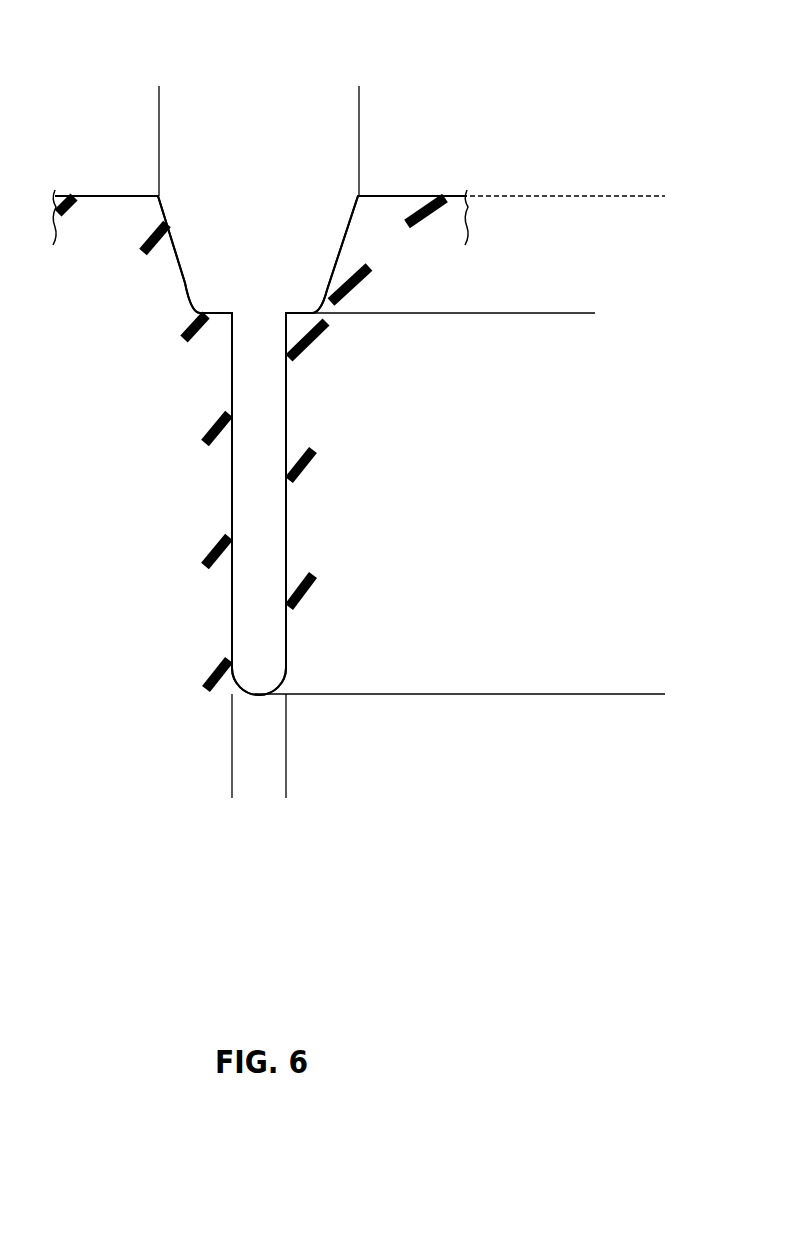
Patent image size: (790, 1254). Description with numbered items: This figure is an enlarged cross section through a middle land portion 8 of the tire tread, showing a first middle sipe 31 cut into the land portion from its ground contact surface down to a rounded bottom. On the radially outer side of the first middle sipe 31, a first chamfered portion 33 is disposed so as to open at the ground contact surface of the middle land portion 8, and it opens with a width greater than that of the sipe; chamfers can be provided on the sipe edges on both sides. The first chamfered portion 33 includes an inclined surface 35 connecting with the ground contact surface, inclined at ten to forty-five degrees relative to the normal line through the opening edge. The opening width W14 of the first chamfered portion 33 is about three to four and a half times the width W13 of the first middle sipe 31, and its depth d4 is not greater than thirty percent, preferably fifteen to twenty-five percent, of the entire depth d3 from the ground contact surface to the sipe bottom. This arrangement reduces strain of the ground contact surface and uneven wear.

The middle land portion 8 is at (390, 112).
The first middle sipe 31 is at (255, 567).
The first chamfered portion 33 is at (186, 282).
The inclined surface 35 is at (185, 262).
The opening width of the first chamfered portion W14 is at (359, 93).
The width of the first middle sipe W13 is at (286, 793).
The entire depth of the first middle sipe d3 is at (659, 196).
The depth of the first chamfered portion d4 is at (587, 196).